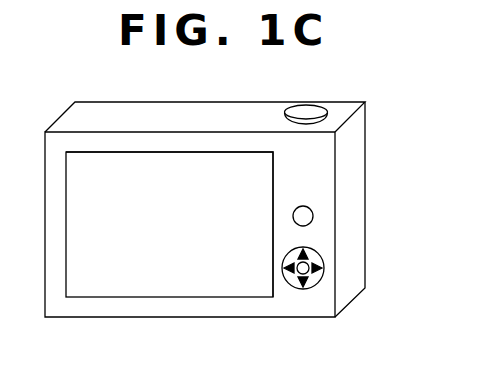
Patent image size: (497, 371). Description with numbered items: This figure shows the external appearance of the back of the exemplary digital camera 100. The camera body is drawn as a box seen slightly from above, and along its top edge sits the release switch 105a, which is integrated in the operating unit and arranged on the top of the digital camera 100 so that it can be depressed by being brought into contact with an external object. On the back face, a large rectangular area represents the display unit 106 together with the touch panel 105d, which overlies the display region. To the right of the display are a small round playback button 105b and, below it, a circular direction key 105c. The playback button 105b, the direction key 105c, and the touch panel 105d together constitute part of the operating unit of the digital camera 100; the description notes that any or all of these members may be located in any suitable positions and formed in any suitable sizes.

The digital camera 100 is at (192, 102).
The release switch 105a is at (306, 108).
The playback button 105b is at (311, 210).
The direction key 105c is at (314, 258).
The touch panel 105d is at (119, 163).
The display unit 106 is at (250, 152).